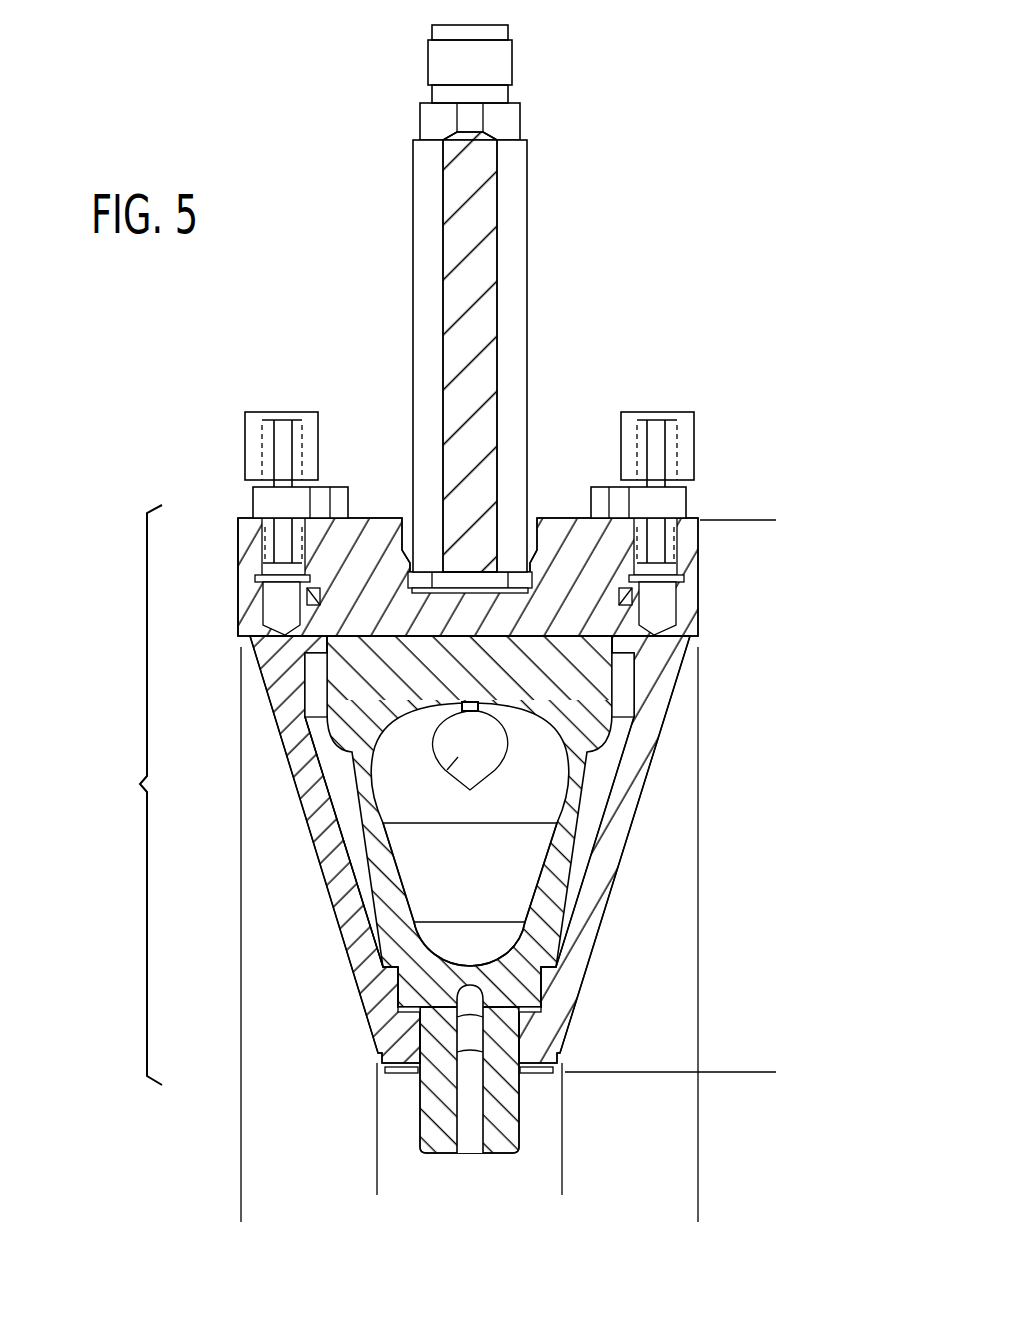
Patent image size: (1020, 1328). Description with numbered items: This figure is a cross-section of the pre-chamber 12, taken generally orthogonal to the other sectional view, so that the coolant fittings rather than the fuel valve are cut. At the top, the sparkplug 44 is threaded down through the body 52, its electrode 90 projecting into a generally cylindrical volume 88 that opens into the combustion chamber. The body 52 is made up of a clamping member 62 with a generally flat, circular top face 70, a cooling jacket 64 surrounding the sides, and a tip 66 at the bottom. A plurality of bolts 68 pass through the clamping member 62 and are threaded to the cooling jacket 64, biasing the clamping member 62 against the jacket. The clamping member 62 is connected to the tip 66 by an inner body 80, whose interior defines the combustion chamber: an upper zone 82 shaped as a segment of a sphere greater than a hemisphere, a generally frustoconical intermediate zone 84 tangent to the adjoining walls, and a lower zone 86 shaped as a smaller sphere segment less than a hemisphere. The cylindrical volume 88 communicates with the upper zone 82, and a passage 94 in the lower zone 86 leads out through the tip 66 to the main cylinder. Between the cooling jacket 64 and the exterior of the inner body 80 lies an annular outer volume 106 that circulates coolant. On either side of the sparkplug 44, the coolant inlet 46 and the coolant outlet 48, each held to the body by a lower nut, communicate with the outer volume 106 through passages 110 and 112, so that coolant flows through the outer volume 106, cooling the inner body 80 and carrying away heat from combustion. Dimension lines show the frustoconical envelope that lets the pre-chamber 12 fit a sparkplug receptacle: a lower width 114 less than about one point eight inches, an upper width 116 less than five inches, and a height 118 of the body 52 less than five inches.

The pre-chamber 12 is at (679, 197).
The sparkplug 44 is at (512, 245).
The coolant inlet 46 is at (689, 420).
The coolant outlet 48 is at (250, 420).
The body 52 is at (136, 795).
The clamping member 62 is at (237, 528).
The cooling jacket 64 is at (303, 812).
The tip 66 is at (524, 1113).
The bolts 68 is at (606, 487).
The top face 70 is at (372, 517).
The inner body 80 is at (550, 888).
The upper zone 82 is at (540, 797).
The intermediate zone 84 is at (525, 853).
The lower zone 86 is at (495, 938).
The generally cylindrical volume 88 is at (455, 762).
The electrode 90 is at (473, 713).
The passage 94 is at (466, 1127).
The outer volume 106 is at (381, 935).
The passage 110 is at (645, 652).
The passage 112 is at (295, 650).
The lower width 114 is at (562, 1182).
The upper width 116 is at (698, 1213).
The height 118 is at (761, 520).